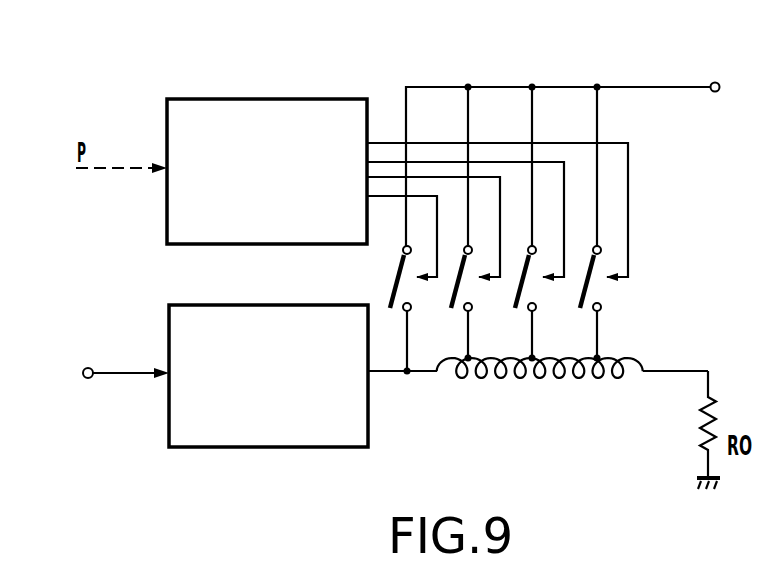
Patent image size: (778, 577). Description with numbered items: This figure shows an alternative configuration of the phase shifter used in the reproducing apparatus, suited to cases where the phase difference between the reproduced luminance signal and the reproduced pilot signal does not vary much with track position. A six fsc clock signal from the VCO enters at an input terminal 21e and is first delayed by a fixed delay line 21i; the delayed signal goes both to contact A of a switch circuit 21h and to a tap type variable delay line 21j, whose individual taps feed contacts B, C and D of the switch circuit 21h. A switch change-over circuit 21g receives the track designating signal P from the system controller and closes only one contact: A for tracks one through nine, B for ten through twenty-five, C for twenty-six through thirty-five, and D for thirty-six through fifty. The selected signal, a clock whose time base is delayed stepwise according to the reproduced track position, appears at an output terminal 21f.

The switch change-over circuit 21g is at (236, 98).
The output terminal 21f is at (714, 82).
The switch circuit 21h is at (636, 277).
The fixed delay line 21i is at (249, 437).
The input terminal 21e is at (87, 368).
The tap type variable delay line 21j is at (531, 378).